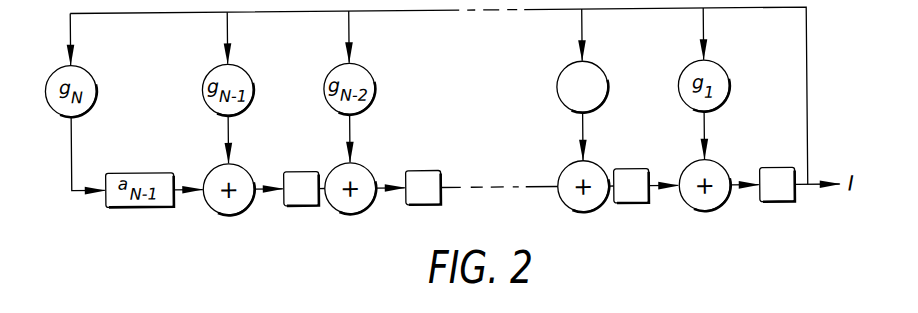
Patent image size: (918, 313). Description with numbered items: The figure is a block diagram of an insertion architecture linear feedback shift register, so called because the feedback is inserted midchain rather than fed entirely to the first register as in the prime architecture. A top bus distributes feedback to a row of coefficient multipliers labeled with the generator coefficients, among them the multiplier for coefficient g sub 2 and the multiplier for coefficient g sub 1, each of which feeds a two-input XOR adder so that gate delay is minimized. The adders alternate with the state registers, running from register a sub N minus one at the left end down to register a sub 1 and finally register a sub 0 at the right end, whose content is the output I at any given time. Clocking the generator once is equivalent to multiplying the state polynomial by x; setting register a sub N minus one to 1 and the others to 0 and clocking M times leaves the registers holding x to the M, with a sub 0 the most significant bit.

The coefficient multiplier g2 2 is at (583, 87).
The coefficient register a1 1 is at (631, 186).
The coefficient register a0 0 is at (777, 184).